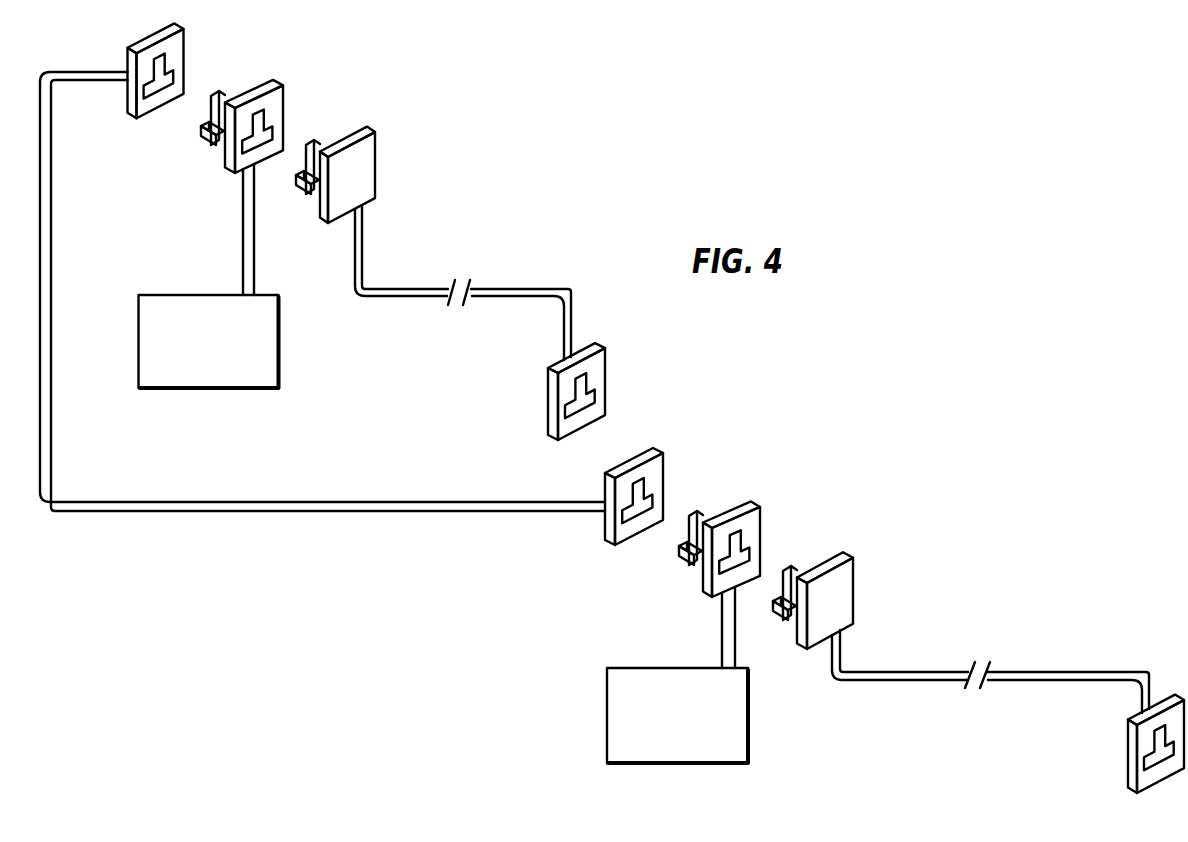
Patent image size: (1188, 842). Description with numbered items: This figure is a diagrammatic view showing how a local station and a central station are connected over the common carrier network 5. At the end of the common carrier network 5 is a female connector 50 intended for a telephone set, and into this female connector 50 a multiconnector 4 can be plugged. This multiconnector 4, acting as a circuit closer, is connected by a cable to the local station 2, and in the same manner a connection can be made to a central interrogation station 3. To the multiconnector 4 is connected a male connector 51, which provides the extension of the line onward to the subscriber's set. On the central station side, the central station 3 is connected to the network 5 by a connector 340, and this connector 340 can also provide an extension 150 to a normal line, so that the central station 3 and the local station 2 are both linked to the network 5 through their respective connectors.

The local station 2 is at (611, 690).
The central interrogation station 3 is at (265, 350).
The multiconnector 4 is at (752, 533).
The common carrier network 5 is at (345, 502).
The female connector 50 is at (655, 468).
The male connector 51 is at (843, 598).
The extension 150 is at (360, 177).
The connector 340 is at (265, 120).